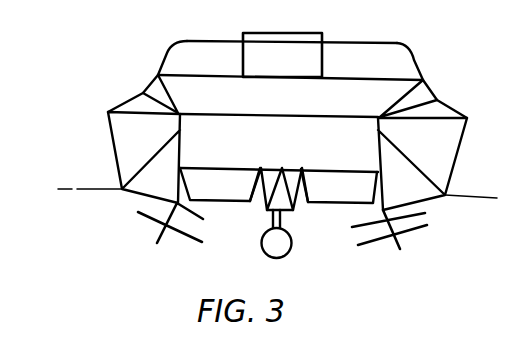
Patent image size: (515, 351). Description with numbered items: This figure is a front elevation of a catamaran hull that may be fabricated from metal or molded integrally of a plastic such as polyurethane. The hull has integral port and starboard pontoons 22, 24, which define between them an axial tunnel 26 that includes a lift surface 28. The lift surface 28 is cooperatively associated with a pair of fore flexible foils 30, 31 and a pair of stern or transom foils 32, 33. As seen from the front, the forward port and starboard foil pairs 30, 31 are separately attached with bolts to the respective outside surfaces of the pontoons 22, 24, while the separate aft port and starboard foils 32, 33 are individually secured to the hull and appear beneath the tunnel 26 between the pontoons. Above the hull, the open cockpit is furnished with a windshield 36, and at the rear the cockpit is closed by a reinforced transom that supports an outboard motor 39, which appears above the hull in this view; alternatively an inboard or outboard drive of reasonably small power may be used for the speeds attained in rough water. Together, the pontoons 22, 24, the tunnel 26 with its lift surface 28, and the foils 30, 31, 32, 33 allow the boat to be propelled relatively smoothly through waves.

The port pontoon 22 is at (432, 162).
The starboard pontoon 24 is at (140, 138).
The axial tunnel 26 is at (175, 177).
The lift surface 28 is at (338, 167).
The fore flexible foil 30 is at (393, 235).
The fore flexible foil 31 is at (165, 225).
The stern foil 32 is at (348, 197).
The stern foil 33 is at (221, 197).
The windshield 36 is at (395, 69).
The outboard motor 39 is at (281, 70).